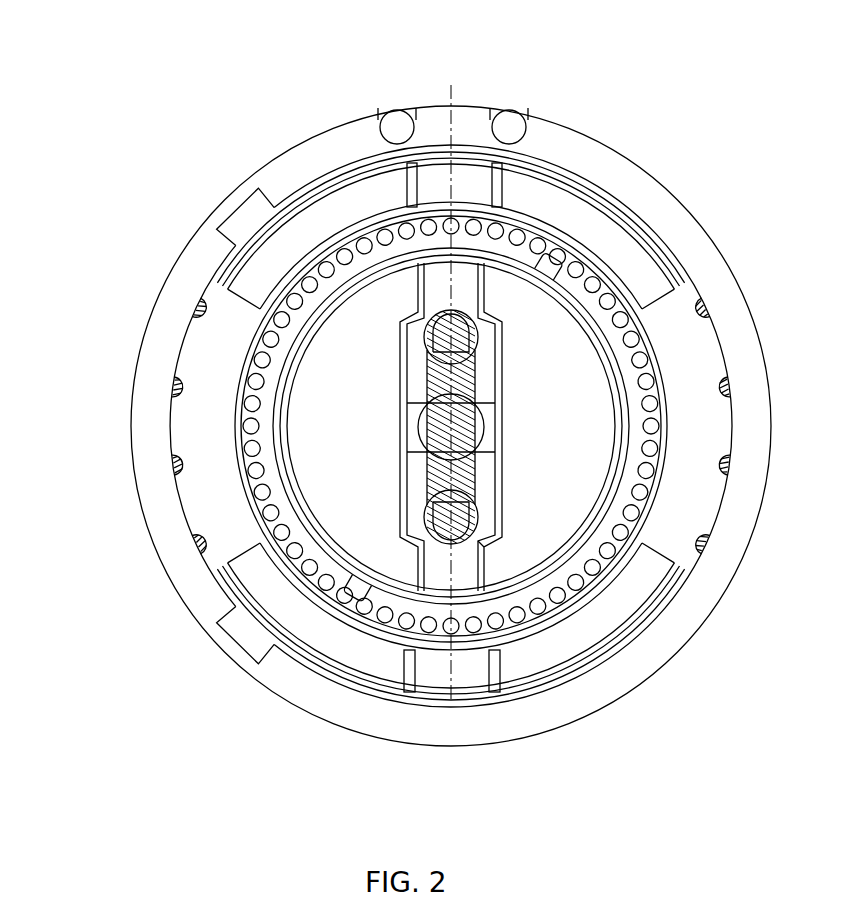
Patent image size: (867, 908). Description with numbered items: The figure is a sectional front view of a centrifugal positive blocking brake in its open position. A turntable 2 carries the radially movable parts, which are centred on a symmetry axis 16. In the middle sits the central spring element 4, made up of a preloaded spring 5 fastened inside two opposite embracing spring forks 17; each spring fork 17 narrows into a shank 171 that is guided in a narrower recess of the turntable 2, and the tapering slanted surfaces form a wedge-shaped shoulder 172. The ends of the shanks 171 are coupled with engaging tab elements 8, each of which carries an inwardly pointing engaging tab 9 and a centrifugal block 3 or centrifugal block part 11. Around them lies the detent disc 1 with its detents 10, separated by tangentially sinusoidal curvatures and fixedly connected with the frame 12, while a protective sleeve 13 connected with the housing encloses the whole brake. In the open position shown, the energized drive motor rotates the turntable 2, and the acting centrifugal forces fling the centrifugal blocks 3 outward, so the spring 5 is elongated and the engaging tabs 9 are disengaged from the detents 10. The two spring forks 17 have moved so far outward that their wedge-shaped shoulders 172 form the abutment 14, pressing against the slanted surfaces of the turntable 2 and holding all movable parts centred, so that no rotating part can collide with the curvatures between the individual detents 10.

The detent disc 1 is at (450, 205).
The turntable 2 is at (541, 350).
The centrifugal block 3 is at (317, 225).
The central spring element 4 is at (490, 242).
The spring 5 is at (440, 487).
The engaging tab element 8 is at (452, 642).
The engaging tab 9 is at (512, 124).
The detent 10 is at (612, 300).
The centrifugal block part 11 is at (453, 427).
The frame 12 is at (237, 527).
The protective sleeve 13 is at (352, 150).
The abutment 14 is at (488, 542).
The symmetry axis 16 is at (450, 120).
The spring fork 17 is at (273, 537).
The shank 171 is at (403, 530).
The wedge-shaped shoulder 172 is at (398, 479).